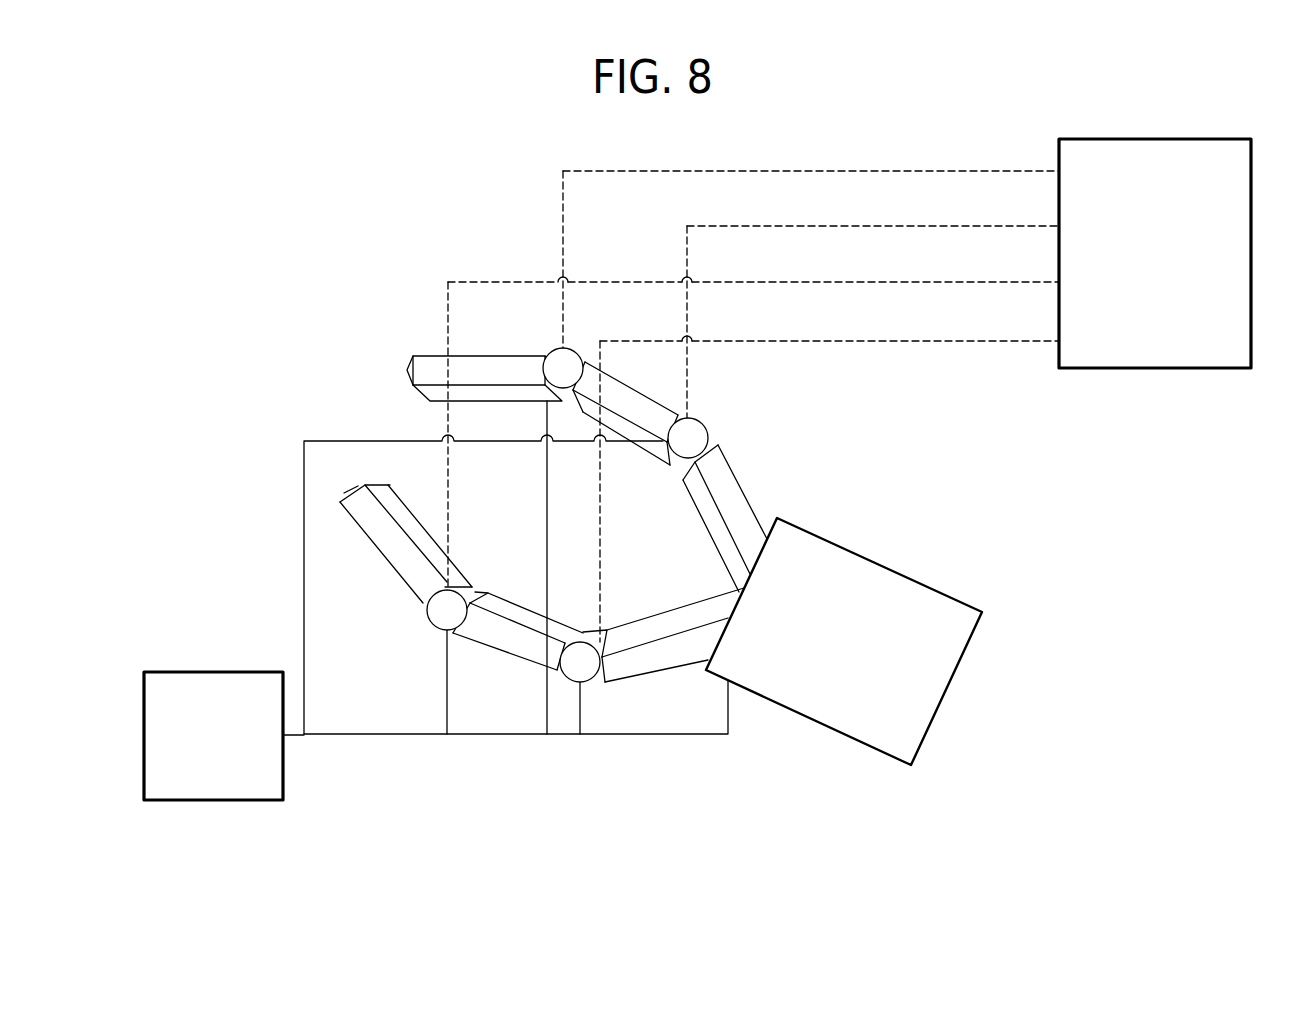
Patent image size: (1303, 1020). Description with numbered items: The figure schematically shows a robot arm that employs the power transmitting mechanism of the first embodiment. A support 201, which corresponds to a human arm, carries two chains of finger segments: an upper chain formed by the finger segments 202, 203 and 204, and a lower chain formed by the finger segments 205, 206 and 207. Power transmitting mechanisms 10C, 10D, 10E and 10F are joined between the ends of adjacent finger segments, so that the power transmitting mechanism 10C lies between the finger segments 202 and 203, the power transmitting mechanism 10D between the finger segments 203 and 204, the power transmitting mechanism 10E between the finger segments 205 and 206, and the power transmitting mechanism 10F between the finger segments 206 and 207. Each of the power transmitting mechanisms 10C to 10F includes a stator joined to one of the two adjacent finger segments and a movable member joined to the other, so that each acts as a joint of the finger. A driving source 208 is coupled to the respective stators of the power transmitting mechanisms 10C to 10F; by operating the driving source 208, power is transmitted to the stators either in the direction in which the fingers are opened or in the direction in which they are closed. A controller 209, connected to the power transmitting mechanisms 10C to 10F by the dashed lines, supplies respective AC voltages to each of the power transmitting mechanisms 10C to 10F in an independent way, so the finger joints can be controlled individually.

The support 201 is at (910, 573).
The finger segment 202 is at (740, 487).
The finger segment 203 is at (650, 458).
The finger segment 204 is at (422, 353).
The finger segment 205 is at (655, 672).
The finger segment 206 is at (495, 640).
The finger segment 207 is at (380, 550).
The driving source 208 is at (220, 801).
The controller 209 is at (1140, 139).
The power transmitting mechanism 10C is at (705, 430).
The power transmitting mechanism 10D is at (577, 348).
The power transmitting mechanism 10E is at (585, 677).
The power transmitting mechanism 10F is at (437, 618).